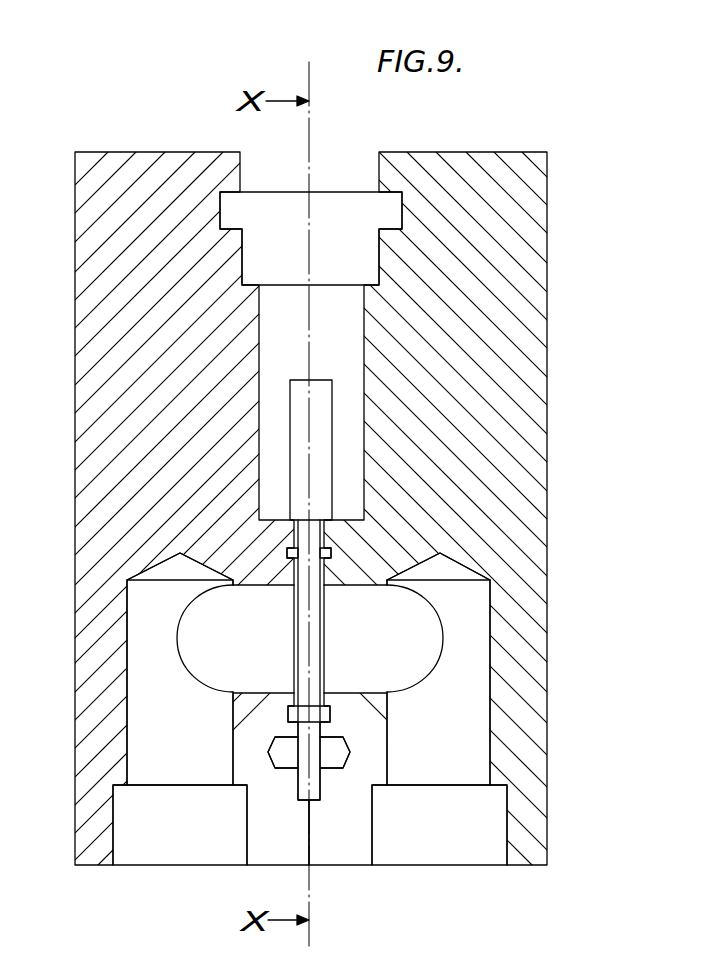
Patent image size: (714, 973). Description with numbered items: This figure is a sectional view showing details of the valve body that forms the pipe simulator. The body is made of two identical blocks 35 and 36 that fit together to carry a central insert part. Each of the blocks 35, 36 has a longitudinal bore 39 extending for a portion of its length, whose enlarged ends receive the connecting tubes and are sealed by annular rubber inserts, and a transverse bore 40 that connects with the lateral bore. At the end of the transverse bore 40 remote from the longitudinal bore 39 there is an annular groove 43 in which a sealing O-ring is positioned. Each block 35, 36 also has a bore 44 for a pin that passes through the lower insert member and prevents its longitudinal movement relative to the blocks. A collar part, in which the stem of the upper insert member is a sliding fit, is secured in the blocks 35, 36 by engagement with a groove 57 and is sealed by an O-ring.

The block 35 is at (105, 347).
The block 36 is at (535, 469).
The longitudinal bore 39 is at (135, 748).
The transverse bore 40 is at (195, 642).
The annular groove 43 is at (320, 550).
The bore 44 is at (330, 757).
The groove 57 is at (258, 248).